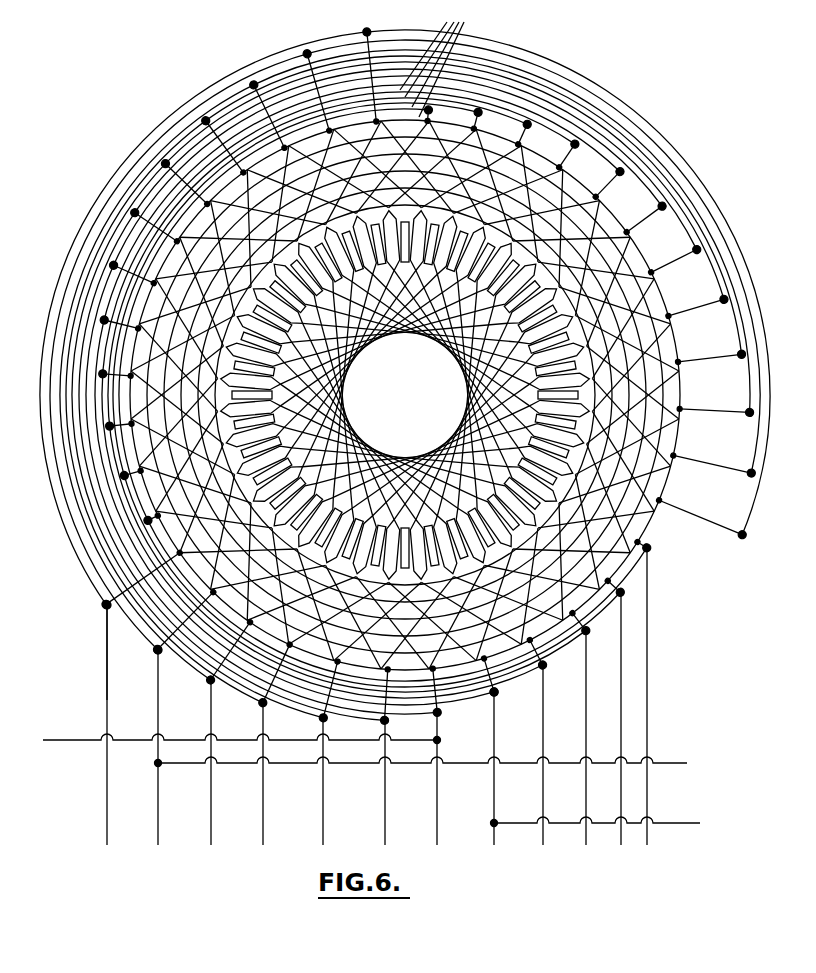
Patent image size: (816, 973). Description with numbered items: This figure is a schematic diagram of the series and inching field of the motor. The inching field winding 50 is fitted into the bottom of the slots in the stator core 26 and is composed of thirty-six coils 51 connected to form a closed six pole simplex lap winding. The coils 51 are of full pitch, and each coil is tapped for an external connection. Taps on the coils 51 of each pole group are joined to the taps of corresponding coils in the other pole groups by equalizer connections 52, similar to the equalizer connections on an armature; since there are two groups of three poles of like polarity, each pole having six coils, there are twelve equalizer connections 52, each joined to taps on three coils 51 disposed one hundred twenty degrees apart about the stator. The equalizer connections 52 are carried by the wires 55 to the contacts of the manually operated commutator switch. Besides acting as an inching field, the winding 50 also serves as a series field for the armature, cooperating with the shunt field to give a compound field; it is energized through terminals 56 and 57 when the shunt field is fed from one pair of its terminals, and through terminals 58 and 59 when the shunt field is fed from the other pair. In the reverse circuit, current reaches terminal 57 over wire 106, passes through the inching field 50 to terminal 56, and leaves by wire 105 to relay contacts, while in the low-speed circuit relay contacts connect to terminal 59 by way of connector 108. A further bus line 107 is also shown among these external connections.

The stator core 26 is at (455, 420).
The inching field winding 50 is at (408, 451).
The coils 51 is at (642, 512).
The equalizer connections 52 is at (270, 62).
The wires 55 is at (158, 836).
The terminal 56 is at (107, 838).
The terminal 57 is at (103, 606).
The terminal 58 is at (496, 693).
The terminal 59 is at (162, 656).
The wire 105 is at (84, 741).
The wire 106 is at (103, 609).
The bus bar 107 is at (678, 823).
The connector 108 is at (666, 763).